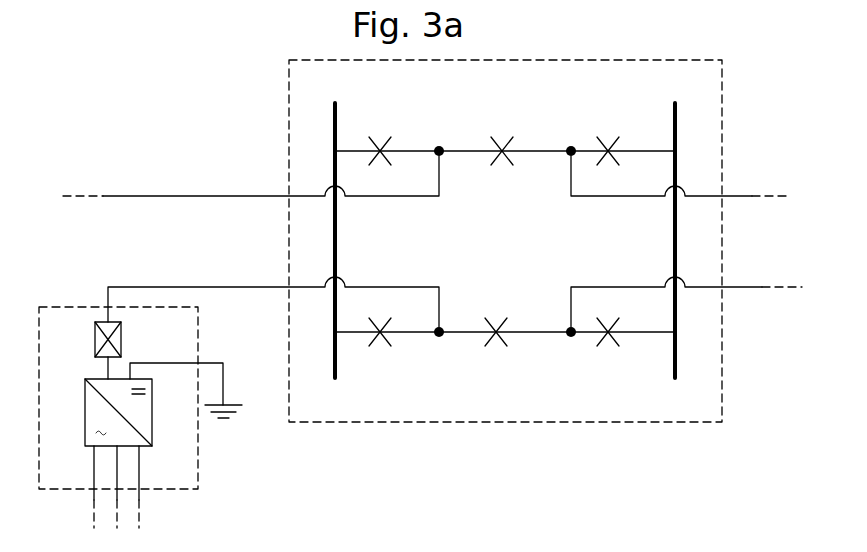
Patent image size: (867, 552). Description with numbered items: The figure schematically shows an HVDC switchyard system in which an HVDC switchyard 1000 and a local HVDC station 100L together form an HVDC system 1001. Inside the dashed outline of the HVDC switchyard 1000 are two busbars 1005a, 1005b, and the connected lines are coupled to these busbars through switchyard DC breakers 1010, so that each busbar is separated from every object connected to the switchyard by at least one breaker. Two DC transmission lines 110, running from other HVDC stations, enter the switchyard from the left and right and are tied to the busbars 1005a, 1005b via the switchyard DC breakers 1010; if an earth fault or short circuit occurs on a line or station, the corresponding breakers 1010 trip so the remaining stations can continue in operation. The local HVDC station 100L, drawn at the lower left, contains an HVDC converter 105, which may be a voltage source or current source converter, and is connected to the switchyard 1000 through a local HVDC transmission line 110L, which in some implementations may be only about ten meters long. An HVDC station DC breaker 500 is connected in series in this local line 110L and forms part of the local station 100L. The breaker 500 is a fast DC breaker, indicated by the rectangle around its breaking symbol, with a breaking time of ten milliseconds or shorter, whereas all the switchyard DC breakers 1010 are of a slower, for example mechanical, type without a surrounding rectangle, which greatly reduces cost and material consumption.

The HVDC switchyard 1000 is at (505, 241).
The HVDC system 1001 is at (497, 497).
The busbar 1005a is at (336, 225).
The busbar 1005b is at (677, 225).
The switchyard DC breaker 1010 is at (605, 132).
The DC transmission line 110 is at (210, 196).
The local HVDC transmission line 110L is at (230, 287).
The local HVDC station 100L is at (198, 462).
The HVDC station DC breaker 500 is at (121, 335).
The HVDC converter 105 is at (85, 425).